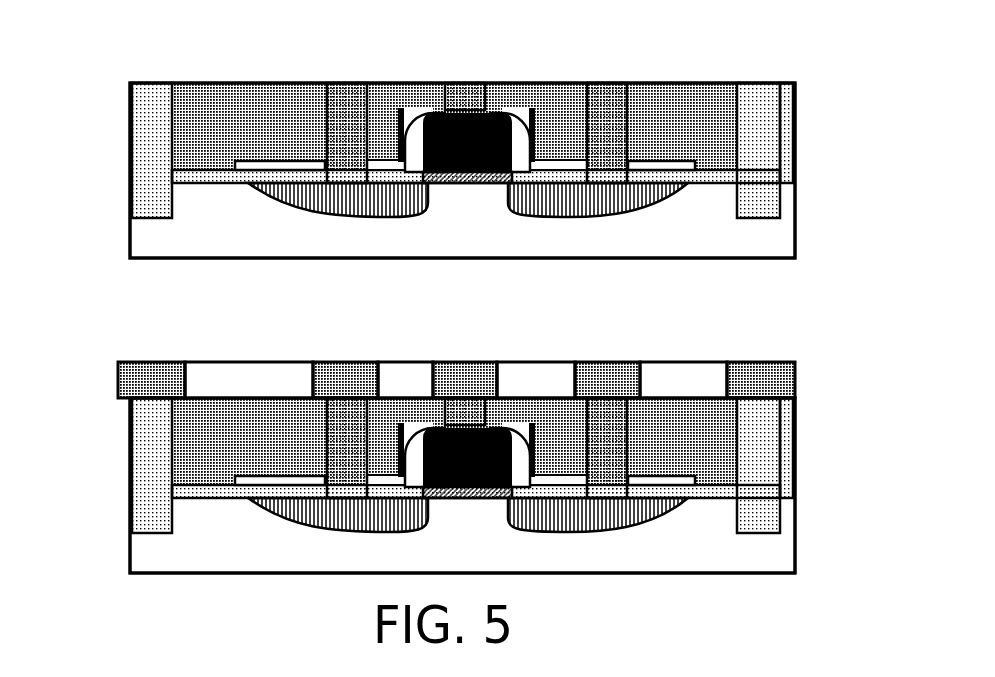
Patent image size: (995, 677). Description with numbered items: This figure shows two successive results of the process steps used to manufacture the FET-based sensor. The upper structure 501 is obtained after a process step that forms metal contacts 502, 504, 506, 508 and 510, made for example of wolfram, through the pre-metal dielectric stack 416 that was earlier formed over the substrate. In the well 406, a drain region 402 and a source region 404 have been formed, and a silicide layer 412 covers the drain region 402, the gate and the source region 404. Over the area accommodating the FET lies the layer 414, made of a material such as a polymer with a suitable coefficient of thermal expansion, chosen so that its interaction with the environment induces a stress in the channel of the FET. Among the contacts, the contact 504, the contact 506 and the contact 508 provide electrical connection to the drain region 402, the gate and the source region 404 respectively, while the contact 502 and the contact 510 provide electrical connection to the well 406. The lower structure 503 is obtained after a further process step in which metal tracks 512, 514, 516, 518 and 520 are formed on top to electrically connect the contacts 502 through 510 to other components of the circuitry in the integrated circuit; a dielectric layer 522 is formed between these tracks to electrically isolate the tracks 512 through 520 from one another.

The drain region 402 is at (322, 192).
The source region 404 is at (650, 193).
The well 406 is at (763, 243).
The silicide layer 412 is at (198, 177).
The layer 414 is at (300, 167).
The pre-metal dielectric stack 416 is at (785, 120).
The structure 501 is at (73, 251).
The metal contact 502 is at (152, 95).
The structure 503 is at (73, 569).
The metal contact 504 is at (345, 95).
The metal contact 506 is at (465, 95).
The metal contact 508 is at (603, 95).
The metal contact 510 is at (755, 95).
The metal track 512 is at (150, 373).
The metal track 514 is at (343, 373).
The metal track 516 is at (467, 377).
The metal track 518 is at (605, 377).
The metal track 520 is at (757, 377).
The dielectric layer 522 is at (255, 375).